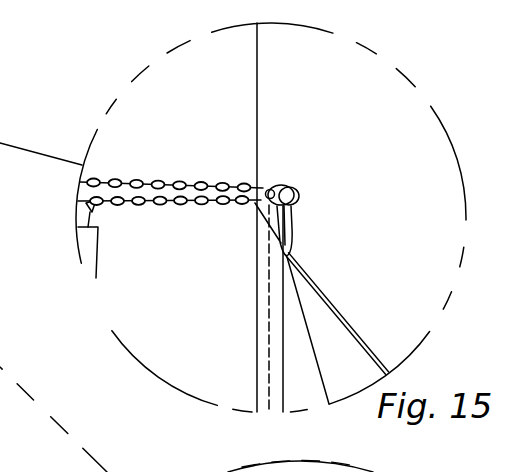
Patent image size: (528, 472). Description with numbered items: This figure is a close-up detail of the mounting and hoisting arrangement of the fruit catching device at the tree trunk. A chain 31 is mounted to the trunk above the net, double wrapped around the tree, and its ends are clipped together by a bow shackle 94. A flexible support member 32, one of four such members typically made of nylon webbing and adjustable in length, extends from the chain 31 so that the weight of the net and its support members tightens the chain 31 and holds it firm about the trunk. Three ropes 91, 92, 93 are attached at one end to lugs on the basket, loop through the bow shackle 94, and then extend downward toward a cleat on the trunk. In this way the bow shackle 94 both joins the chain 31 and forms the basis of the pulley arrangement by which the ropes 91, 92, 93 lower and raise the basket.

The chain 31 is at (176, 182).
The bow shackle 94 is at (291, 192).
The flexible support member 32 is at (316, 284).
The rope 93 is at (320, 343).
The rope 91 is at (268, 297).
The rope 92 is at (282, 323).